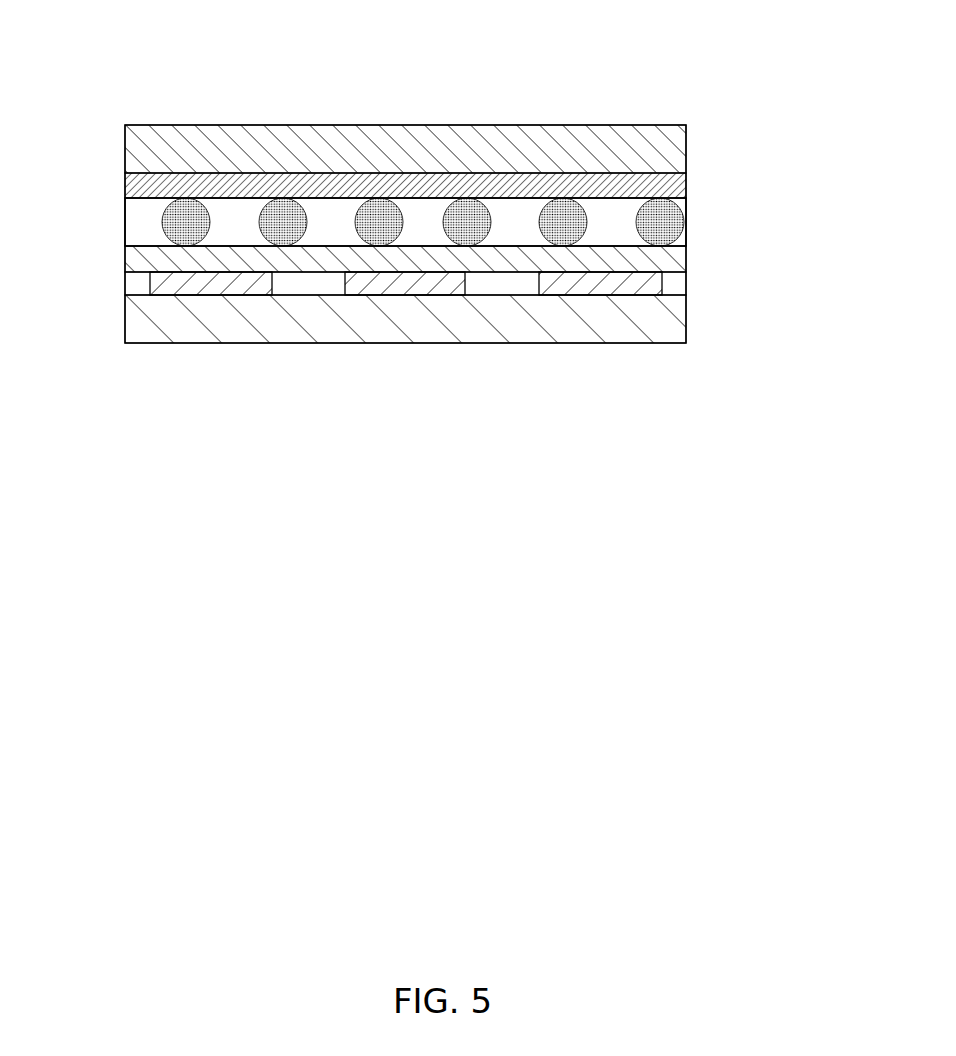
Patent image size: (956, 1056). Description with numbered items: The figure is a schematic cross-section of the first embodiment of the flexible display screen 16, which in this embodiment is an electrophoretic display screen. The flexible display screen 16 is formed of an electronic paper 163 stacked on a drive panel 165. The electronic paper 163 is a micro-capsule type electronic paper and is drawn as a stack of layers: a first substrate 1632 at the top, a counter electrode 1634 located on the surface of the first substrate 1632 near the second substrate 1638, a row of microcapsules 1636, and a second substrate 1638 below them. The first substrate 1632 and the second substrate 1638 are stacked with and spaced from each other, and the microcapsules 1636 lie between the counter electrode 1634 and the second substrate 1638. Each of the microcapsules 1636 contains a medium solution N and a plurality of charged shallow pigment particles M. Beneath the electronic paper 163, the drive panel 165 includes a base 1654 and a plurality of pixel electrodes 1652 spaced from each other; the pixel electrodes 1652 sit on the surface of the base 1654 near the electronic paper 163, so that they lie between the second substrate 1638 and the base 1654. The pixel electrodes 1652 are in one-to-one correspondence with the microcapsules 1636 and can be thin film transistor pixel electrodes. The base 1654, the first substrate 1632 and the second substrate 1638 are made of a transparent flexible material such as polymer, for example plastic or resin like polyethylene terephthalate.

The flexible display screen 16 is at (393, 86).
The electronic paper 163 is at (110, 125).
The drive panel 165 is at (110, 272).
The first substrate 1632 is at (686, 140).
The counter electrode 1634 is at (686, 186).
The microcapsules 1636 is at (487, 215).
The medium solution N is at (686, 201).
The shallow pigment particles M is at (686, 229).
The second substrate 1638 is at (686, 260).
The pixel electrodes 1652 is at (662, 286).
The base 1654 is at (686, 323).